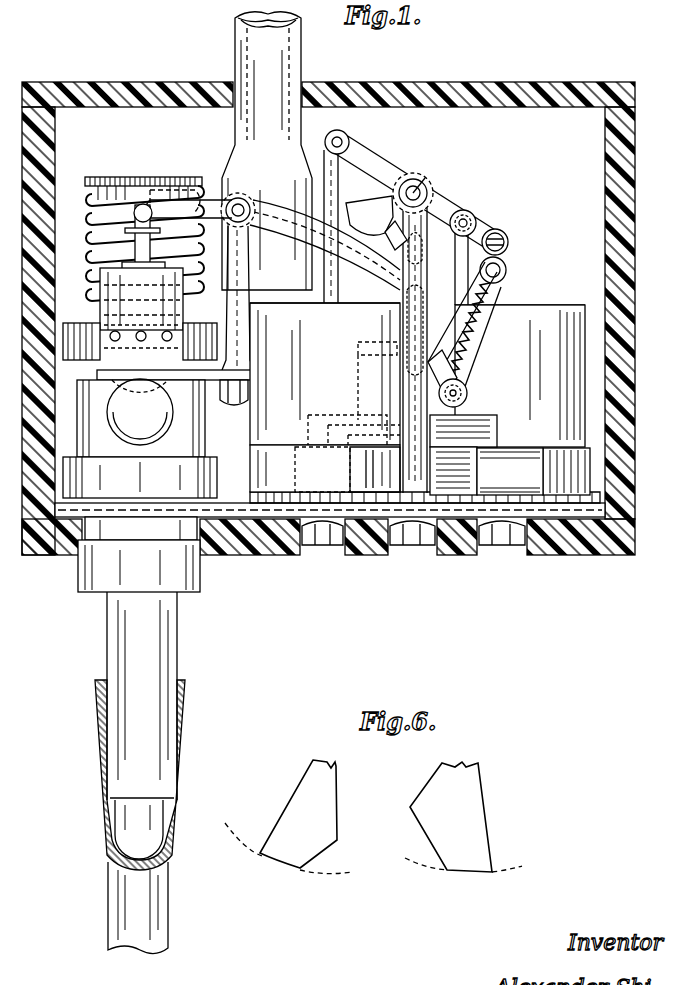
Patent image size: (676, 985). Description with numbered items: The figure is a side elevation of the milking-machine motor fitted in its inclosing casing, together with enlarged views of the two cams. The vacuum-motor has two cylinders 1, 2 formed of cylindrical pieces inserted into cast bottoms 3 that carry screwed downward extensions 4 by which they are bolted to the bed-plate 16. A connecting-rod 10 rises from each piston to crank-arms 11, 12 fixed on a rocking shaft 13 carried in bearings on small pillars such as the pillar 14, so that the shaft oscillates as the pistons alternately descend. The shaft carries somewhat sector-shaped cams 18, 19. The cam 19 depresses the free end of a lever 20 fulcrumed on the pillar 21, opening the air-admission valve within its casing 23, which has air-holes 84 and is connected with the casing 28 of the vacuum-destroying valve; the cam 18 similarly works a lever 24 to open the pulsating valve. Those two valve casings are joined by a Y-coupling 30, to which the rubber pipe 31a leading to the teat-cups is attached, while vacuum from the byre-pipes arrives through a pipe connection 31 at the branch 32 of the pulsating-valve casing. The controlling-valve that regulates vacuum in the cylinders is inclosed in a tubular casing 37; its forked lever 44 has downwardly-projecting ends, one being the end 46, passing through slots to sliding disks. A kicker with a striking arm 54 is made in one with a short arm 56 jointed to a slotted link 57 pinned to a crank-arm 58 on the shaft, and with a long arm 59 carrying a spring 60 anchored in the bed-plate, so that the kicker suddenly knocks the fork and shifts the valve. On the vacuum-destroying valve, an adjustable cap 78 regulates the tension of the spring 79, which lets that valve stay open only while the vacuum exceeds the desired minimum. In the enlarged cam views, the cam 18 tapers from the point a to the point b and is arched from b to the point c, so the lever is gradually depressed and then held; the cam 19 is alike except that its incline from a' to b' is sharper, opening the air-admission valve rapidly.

In FIG. 1, the cylinder 1 is at (325, 374).
In FIG. 1, the cylinder 2 is at (520, 376).
In FIG. 1, the cast bottom 3 is at (643, 458).
In FIG. 1, the screwed downward extension 4 is at (305, 548).
In FIG. 1, the connecting-rod 10 is at (341, 305).
In FIG. 1, the crank-arm 11 is at (375, 163).
In FIG. 1, the crank-arm 12 is at (488, 232).
In FIG. 1, the rocking shaft 13 is at (422, 182).
In FIG. 1, the pillar 14 is at (398, 466).
In FIG. 1, the bed-plate 16 is at (595, 512).
In FIG. 1, the cam 18 is at (392, 236).
In FIG. 6, the cam 18 is at (463, 817).
In FIG. 1, the cam 19 is at (369, 215).
In FIG. 6, the cam 19 is at (288, 817).
In FIG. 1, the lever 20 is at (283, 222).
In FIG. 1, the pillar 21 is at (226, 302).
In FIG. 1, the casing 23 is at (100, 304).
In FIG. 1, the lever 24 is at (375, 272).
In FIG. 1, the casing 28 is at (161, 434).
In FIG. 1, the Y-coupling 30 is at (139, 688).
In FIG. 1, the pipe connection 31 is at (267, 151).
In FIG. 1, the pipe 31a is at (138, 908).
In FIG. 1, the branch 32 is at (272, 376).
In FIG. 1, the tubular casing 37 is at (486, 471).
In FIG. 1, the forked lever 44 is at (338, 418).
In FIG. 1, the downwardly-projecting end 46 is at (490, 433).
In FIG. 1, the kicker arm 54 is at (376, 381).
In FIG. 1, the short arm 56 is at (468, 396).
In FIG. 1, the slotted link 57 is at (456, 254).
In FIG. 1, the crank-arm 58 is at (457, 210).
In FIG. 1, the long arm 59 is at (448, 310).
In FIG. 1, the spring 60 is at (470, 353).
In FIG. 1, the adjustable cap 78 is at (120, 178).
In FIG. 1, the spring 79 is at (95, 238).
In FIG. 1, the air-holes 84 is at (140, 343).
In FIG. 6, the point a is at (402, 821).
In FIG. 6, the point a' is at (340, 838).
In FIG. 6, the point b is at (441, 885).
In FIG. 6, the point b' is at (298, 881).
In FIG. 6, the point c is at (262, 856).